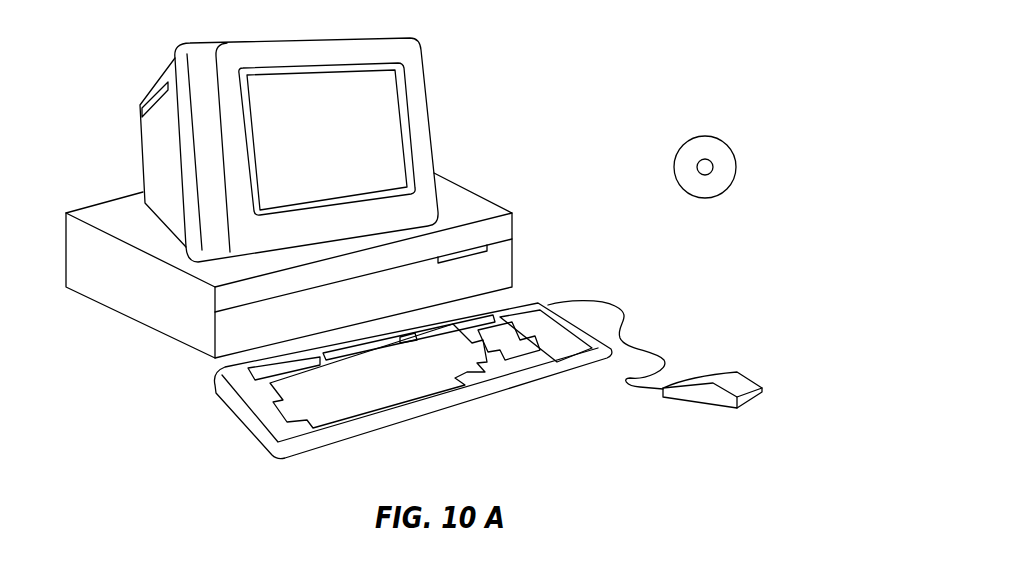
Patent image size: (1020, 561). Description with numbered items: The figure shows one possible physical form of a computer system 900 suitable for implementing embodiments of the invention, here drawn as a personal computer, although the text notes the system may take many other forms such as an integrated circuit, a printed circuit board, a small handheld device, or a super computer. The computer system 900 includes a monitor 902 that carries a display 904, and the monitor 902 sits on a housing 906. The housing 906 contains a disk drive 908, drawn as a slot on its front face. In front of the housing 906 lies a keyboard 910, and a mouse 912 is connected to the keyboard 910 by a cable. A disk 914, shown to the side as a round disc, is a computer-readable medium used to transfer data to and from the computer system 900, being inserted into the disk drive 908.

The computer system 900 is at (623, 40).
The monitor 902 is at (433, 150).
The display 904 is at (393, 100).
The housing 906 is at (182, 262).
The disk drive 908 is at (488, 240).
The keyboard 910 is at (442, 414).
The mouse 912 is at (752, 380).
The disk 914 is at (719, 139).